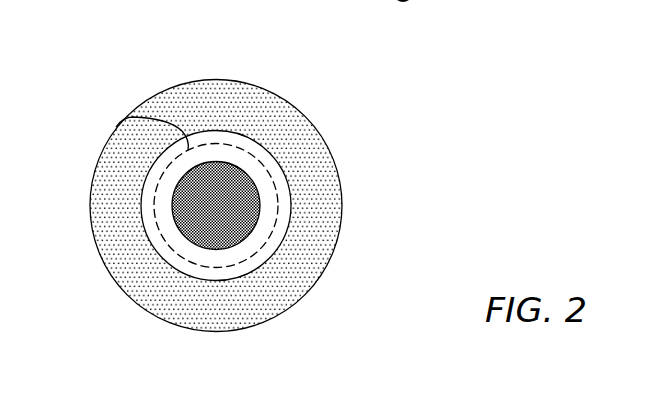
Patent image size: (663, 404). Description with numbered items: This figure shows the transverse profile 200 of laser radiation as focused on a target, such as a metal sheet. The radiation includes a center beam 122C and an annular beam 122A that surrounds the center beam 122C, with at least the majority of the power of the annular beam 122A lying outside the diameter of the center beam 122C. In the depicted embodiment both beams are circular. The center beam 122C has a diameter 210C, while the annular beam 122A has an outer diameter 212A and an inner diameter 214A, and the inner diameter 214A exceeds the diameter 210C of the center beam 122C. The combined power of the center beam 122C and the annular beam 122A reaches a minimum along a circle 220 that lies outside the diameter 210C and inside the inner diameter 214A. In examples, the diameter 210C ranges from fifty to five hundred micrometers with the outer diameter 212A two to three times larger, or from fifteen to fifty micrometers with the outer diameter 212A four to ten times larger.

The transverse profile 200 is at (121, 44).
The annular beam 122A is at (235, 115).
The center beam 122C is at (235, 216).
The circle 220 is at (132, 117).
The 1/e²-diameter of center beam 210C is at (198, 162).
The inner 1/e²-diameter of annular beam 214A is at (212, 131).
The outer 1/e²-diameter of annular beam 212A is at (212, 80).